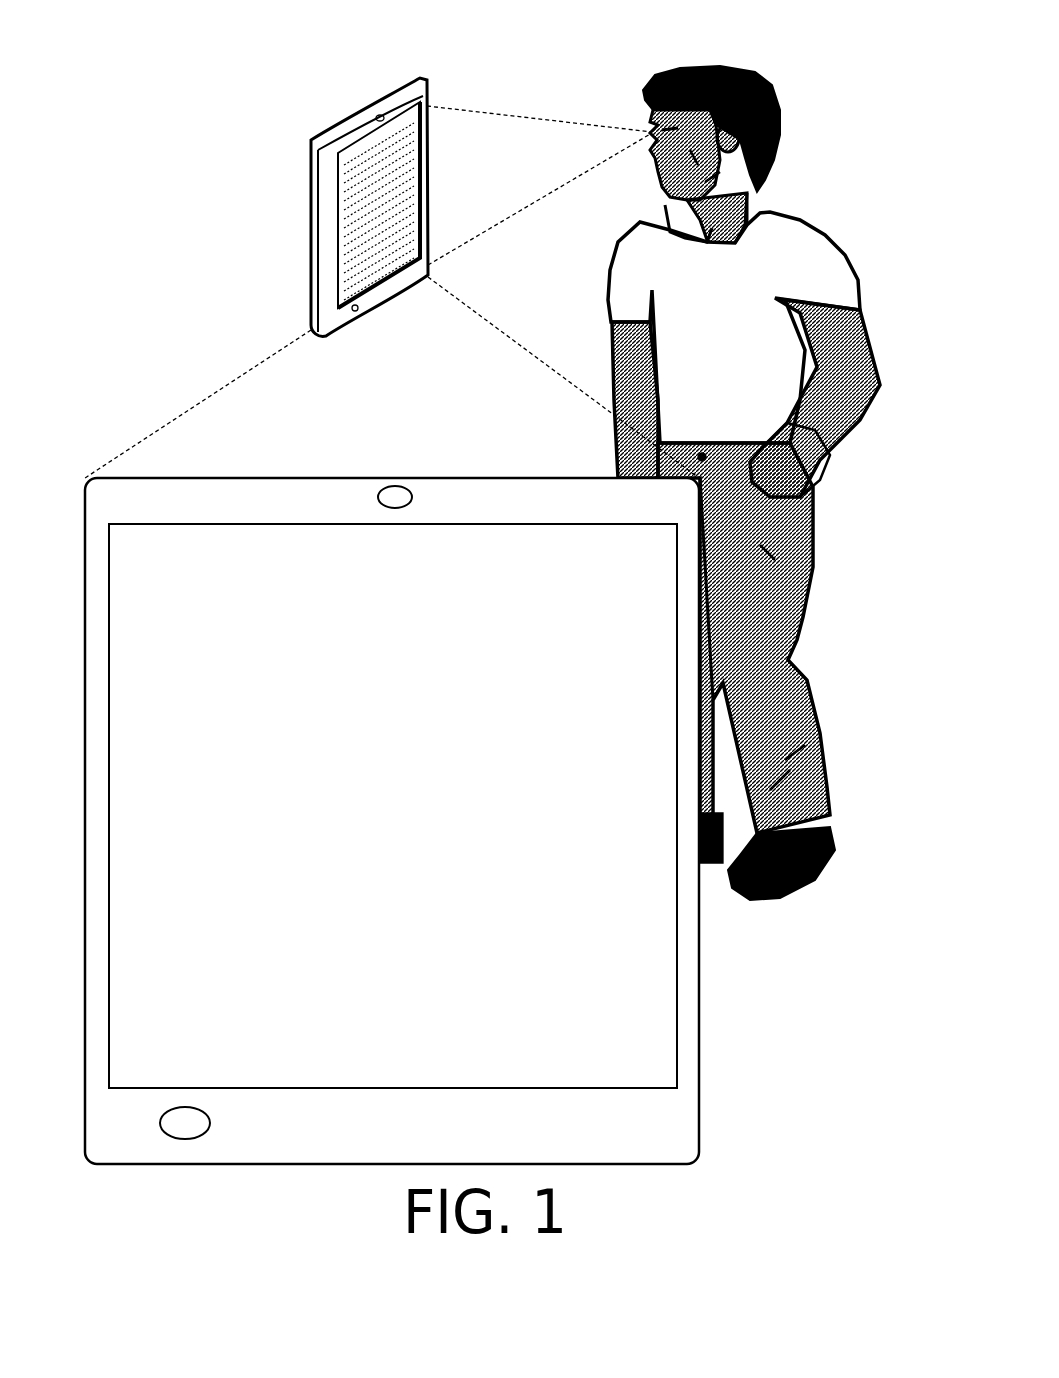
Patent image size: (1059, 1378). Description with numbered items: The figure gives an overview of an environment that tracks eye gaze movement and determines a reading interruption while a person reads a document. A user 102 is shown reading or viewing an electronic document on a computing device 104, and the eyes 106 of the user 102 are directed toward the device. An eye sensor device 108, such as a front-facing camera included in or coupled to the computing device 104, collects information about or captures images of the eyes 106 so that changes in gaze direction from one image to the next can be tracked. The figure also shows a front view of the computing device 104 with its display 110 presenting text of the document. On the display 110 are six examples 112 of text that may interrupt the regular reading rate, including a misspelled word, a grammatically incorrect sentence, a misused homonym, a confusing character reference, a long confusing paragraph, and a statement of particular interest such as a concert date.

The user 102 is at (722, 68).
The computing device 104 is at (328, 116).
The eyes 106 is at (650, 121).
The eye sensor device 108 is at (378, 116).
The display 110 is at (280, 523).
The examples 112 is at (393, 806).